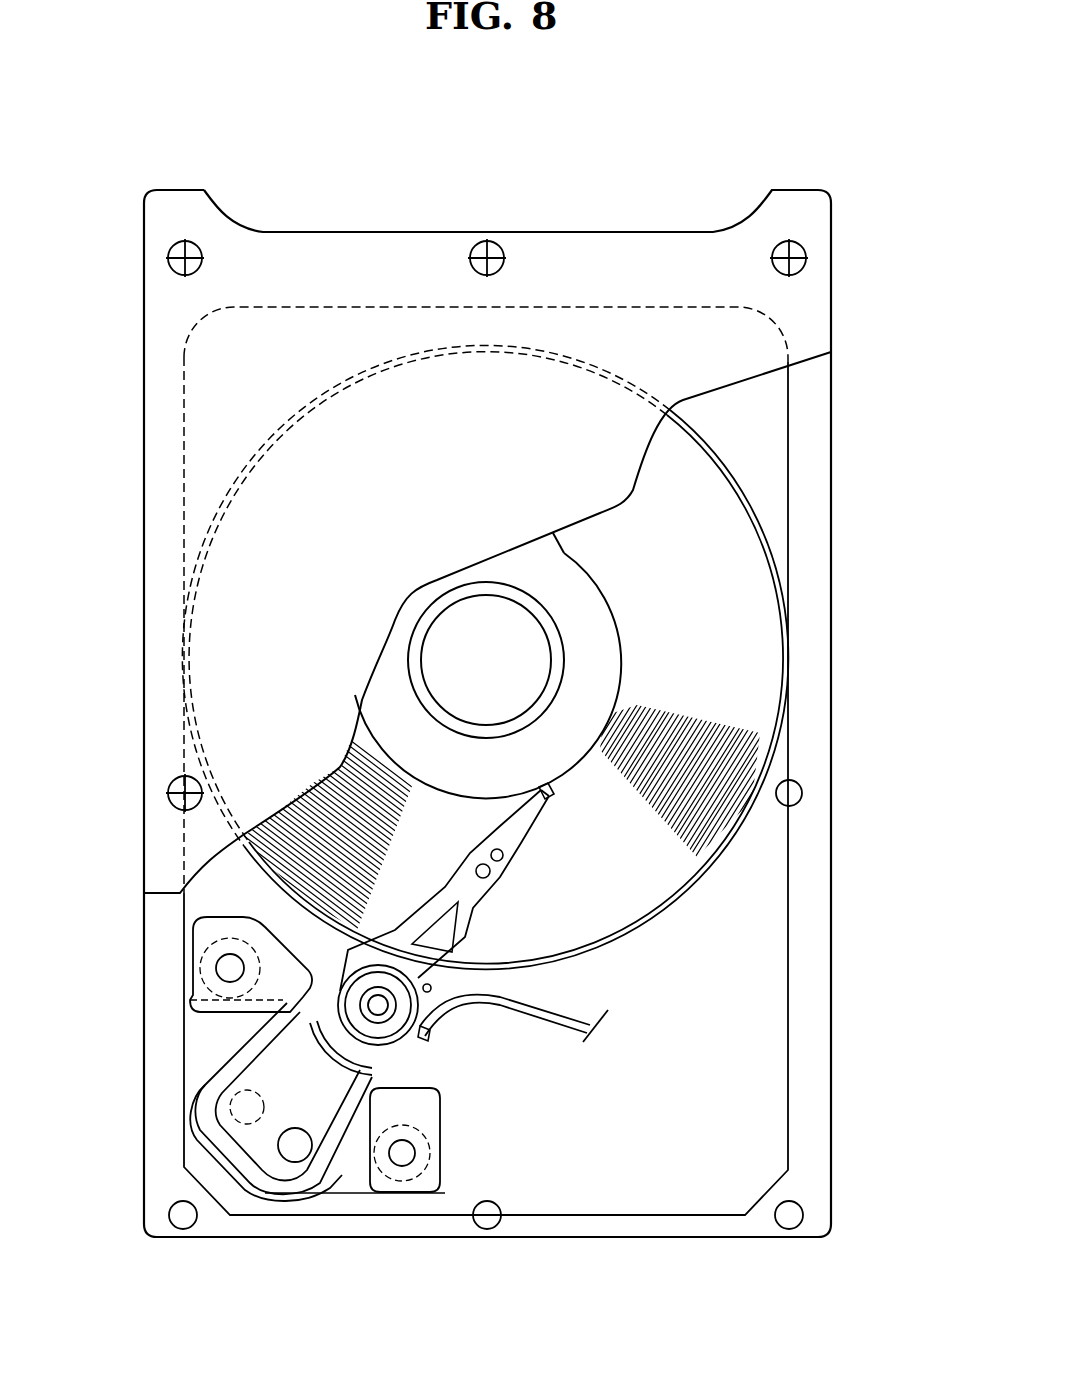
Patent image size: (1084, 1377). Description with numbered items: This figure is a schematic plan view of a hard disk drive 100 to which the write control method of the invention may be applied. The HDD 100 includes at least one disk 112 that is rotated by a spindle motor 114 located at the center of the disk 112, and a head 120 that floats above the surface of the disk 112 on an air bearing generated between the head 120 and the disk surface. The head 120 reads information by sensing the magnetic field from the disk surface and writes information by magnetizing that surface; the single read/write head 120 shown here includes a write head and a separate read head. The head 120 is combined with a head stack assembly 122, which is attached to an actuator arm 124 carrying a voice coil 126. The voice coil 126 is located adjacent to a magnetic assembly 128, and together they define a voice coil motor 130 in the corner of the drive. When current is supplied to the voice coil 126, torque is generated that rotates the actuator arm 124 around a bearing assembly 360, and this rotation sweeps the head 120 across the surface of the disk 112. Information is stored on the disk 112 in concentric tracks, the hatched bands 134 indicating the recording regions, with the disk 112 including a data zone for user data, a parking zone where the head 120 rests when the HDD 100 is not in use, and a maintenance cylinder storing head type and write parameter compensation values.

The hard disk drive 100 is at (662, 167).
The disk 112 is at (740, 590).
The spindle motor 114 is at (461, 634).
The head 120 is at (548, 800).
The head stack assembly 122 is at (510, 848).
The actuator arm 124 is at (300, 1035).
The voice coil 126 is at (217, 1097).
The magnetic assembly 128 is at (213, 1033).
The voice coil motor 130 is at (347, 1167).
The data zone of disk 134 is at (312, 817).
The bearing assembly 360 is at (392, 1015).